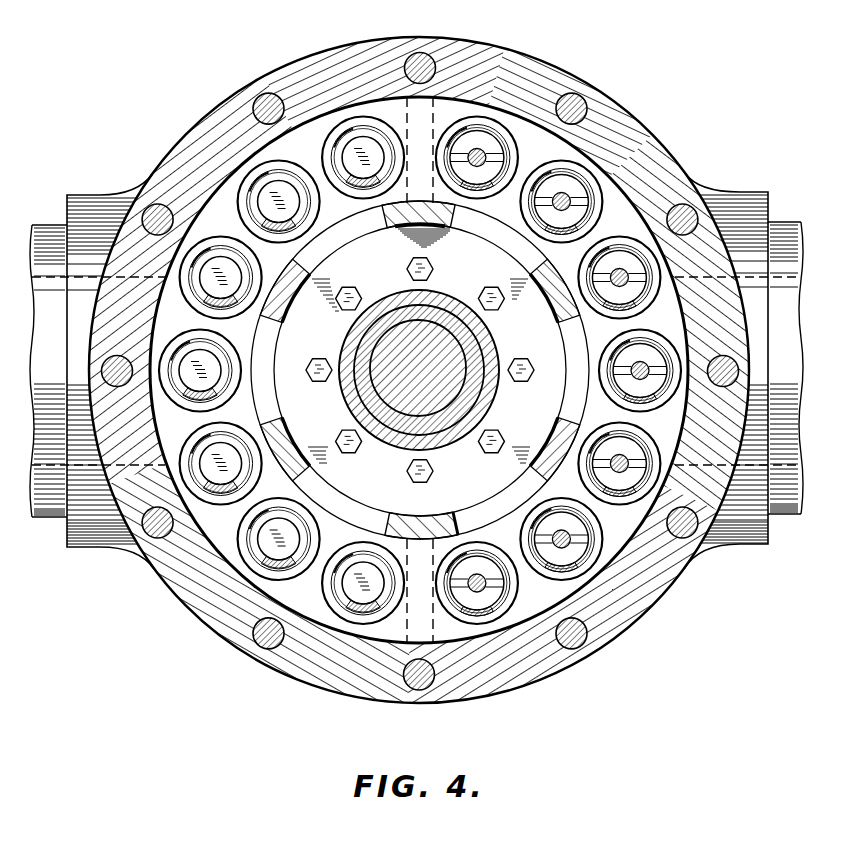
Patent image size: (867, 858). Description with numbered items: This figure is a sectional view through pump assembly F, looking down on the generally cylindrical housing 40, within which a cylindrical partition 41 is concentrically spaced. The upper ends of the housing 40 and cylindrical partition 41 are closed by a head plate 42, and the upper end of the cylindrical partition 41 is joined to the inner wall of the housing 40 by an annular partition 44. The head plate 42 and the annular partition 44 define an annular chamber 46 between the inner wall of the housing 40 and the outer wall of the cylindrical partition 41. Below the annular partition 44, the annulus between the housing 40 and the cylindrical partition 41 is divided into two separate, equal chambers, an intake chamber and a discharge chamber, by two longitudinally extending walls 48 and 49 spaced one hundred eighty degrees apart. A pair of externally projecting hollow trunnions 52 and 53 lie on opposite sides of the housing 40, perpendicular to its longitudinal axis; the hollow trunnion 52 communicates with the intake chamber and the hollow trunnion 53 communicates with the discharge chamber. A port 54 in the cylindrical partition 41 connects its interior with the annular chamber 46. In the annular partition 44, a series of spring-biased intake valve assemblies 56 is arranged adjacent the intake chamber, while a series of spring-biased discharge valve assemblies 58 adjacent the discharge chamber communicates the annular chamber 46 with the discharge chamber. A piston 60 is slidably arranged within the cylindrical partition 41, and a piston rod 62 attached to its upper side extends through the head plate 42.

The housing 40 is at (628, 117).
The cylindrical partition 41 is at (615, 215).
The head plate 42 is at (350, 405).
The annular partition 44 is at (256, 328).
The annular chamber 46 is at (476, 375).
The longitudinally extending wall 48 is at (476, 63).
The longitudinally extending wall 49 is at (403, 624).
The hollow trunnion 52 is at (45, 247).
The hollow trunnion 53 is at (785, 230).
The port 54 is at (508, 235).
The spring-biased intake valve assembly 56 is at (356, 146).
The spring-biased discharge valve assembly 58 is at (488, 138).
The piston 60 is at (380, 267).
The piston rod 62 is at (450, 360).